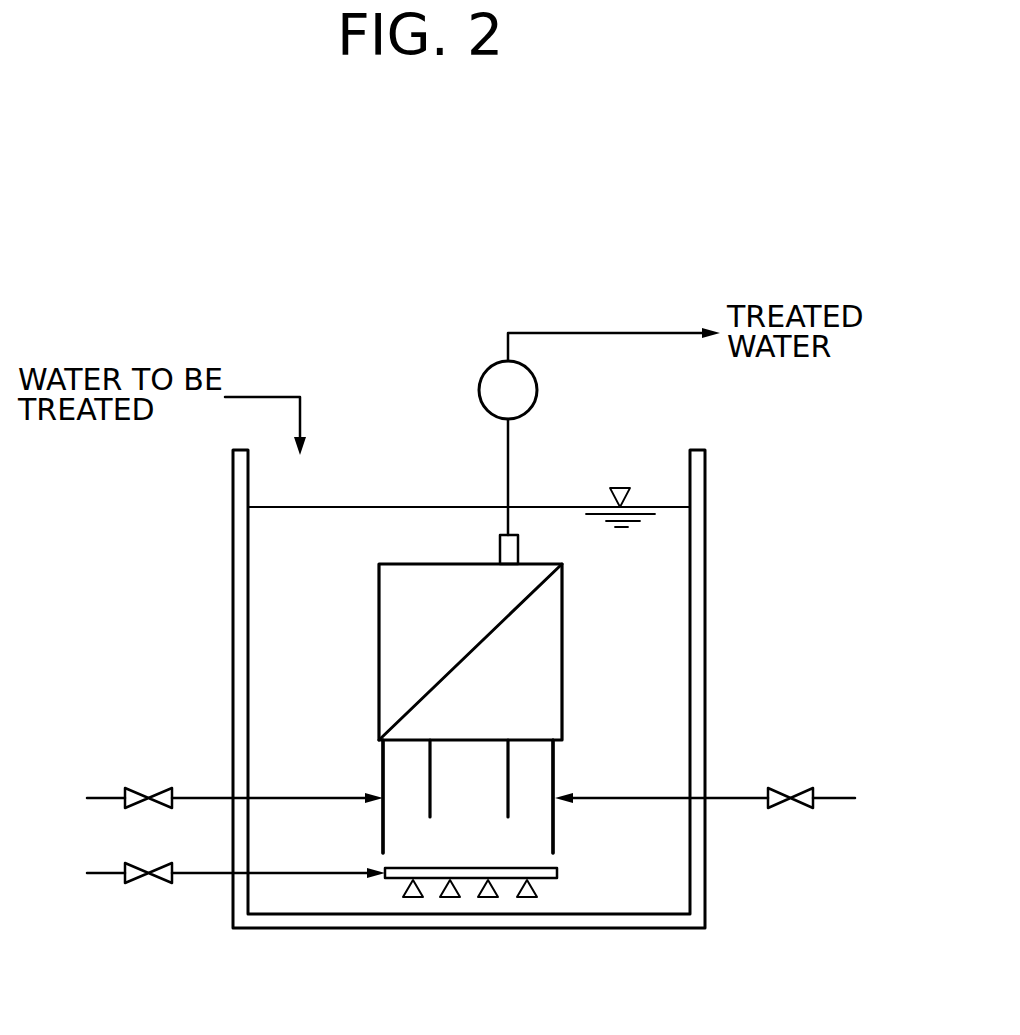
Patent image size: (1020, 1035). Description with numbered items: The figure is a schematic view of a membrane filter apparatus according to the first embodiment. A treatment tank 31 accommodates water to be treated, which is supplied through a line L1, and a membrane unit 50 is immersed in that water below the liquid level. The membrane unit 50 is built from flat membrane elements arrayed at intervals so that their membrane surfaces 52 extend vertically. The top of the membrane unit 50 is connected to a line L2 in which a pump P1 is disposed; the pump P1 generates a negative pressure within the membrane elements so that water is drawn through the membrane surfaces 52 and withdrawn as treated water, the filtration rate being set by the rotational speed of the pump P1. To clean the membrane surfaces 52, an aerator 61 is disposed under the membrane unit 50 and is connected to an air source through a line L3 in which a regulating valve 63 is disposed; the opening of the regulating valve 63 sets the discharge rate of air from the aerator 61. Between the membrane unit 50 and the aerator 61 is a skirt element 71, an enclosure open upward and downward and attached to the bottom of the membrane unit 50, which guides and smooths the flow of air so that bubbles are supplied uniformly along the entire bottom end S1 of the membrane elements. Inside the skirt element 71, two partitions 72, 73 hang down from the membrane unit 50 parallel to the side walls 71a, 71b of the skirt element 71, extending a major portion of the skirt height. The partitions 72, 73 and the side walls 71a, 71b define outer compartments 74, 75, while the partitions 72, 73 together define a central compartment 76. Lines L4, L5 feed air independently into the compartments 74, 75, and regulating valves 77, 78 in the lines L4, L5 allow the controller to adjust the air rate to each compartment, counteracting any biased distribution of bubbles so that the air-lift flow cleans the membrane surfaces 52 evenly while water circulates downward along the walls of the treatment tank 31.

The treatment tank 31 is at (705, 535).
The membrane unit 50 is at (372, 593).
The membrane surfaces 52 is at (542, 627).
The bottom end of the membrane element S1 is at (480, 737).
The skirt element 71 is at (566, 823).
The side wall of the skirt element 71a is at (380, 816).
The side wall of the skirt element 71b is at (553, 845).
The compartment 74 is at (408, 760).
The compartment 75 is at (533, 763).
The compartment 76 is at (457, 762).
The partition 72 is at (425, 817).
The partition 73 is at (507, 808).
The aerator 61 is at (470, 890).
The pump P1 is at (508, 390).
The line L1 is at (270, 397).
The line L2 is at (508, 458).
The line L3 is at (205, 875).
The line L4 is at (200, 798).
The line L5 is at (740, 797).
The regulating valve 77 is at (133, 790).
The regulating valve 63 is at (138, 883).
The regulating valve 78 is at (797, 790).